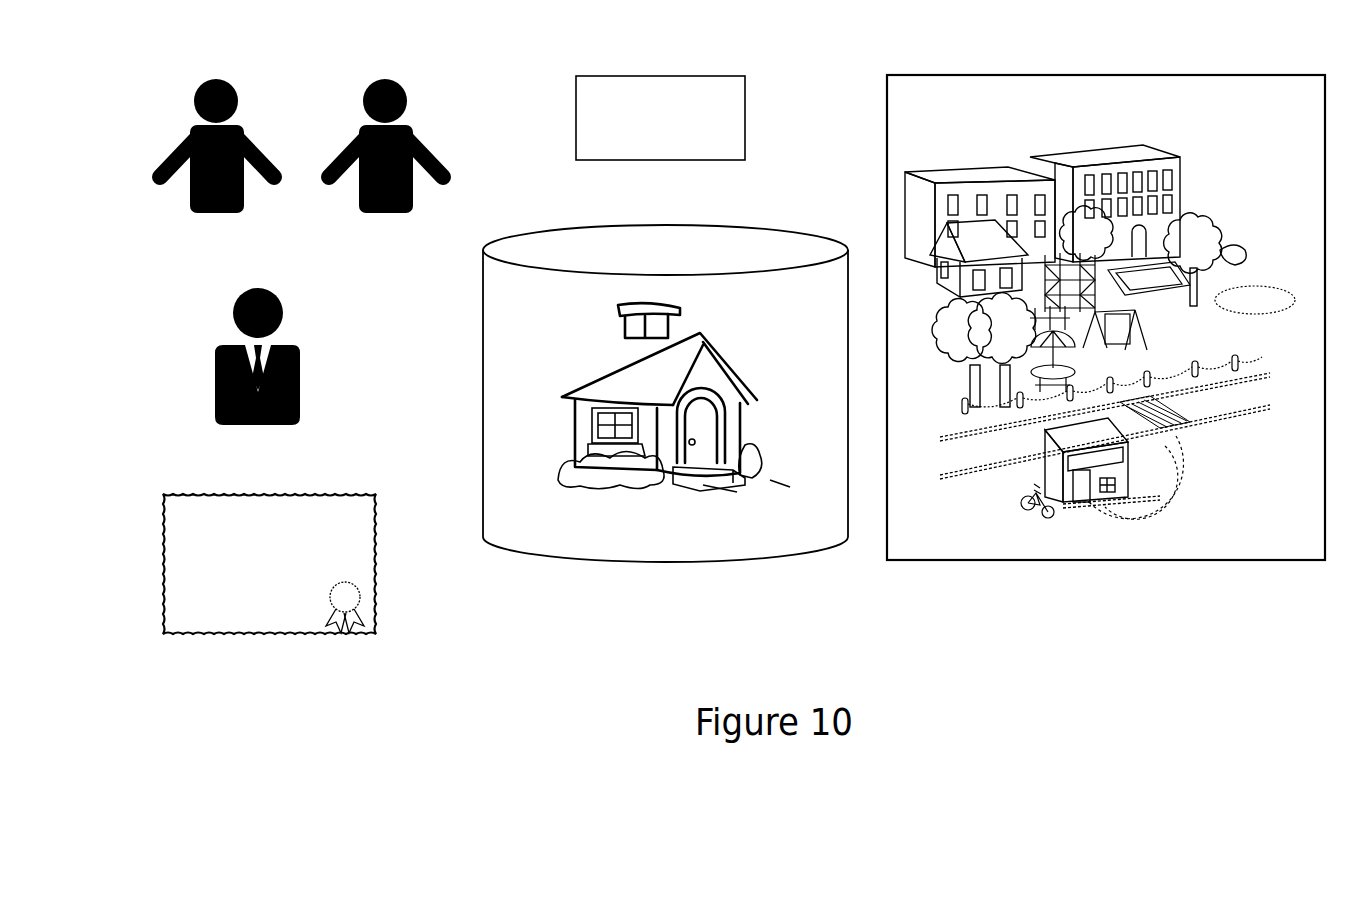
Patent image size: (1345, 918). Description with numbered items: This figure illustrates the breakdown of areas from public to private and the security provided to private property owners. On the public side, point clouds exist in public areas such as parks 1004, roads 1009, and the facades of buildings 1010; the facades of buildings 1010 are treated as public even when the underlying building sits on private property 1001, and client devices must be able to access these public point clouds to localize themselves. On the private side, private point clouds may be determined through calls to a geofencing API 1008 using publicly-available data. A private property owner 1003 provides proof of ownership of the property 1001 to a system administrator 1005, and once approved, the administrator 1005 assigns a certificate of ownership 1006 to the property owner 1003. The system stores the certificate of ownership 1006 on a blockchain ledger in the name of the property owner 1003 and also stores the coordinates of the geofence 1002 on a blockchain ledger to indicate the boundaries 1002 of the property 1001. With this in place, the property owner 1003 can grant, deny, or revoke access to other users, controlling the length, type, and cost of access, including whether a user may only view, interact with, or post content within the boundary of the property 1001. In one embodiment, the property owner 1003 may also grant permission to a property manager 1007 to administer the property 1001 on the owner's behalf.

The private property 1001 is at (674, 418).
The geofence 1002 is at (634, 393).
The property owner 1003 is at (208, 162).
The park 1004 is at (1106, 344).
The system administrator 1005 is at (242, 378).
The certificate of ownership 1006 is at (305, 565).
The property manager 1007 is at (376, 162).
The geofencing API 1008 is at (660, 135).
The road 1009 is at (1212, 435).
The building facade 1010 is at (1189, 173).